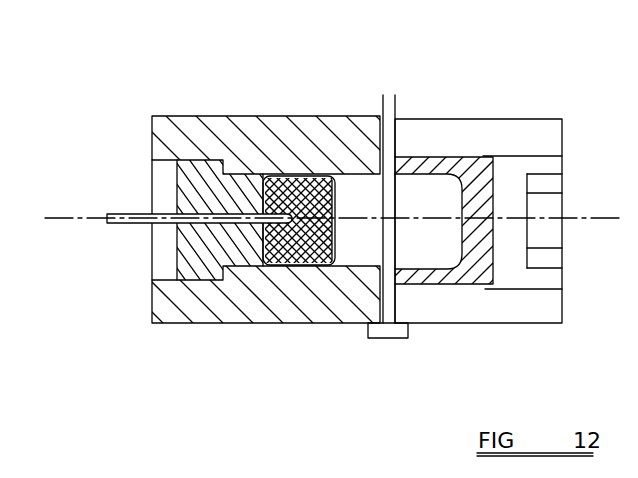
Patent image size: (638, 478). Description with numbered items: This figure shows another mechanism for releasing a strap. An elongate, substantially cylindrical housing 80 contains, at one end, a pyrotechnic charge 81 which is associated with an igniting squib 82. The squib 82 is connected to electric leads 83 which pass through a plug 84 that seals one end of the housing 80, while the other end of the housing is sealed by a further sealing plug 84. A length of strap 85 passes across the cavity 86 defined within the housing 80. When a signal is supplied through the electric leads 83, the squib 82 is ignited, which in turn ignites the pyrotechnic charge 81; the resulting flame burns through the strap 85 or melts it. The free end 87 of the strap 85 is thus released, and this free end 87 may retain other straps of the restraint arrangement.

The housing 80 is at (260, 124).
The pyrotechnic charge 81 is at (305, 265).
The igniting squib 82 is at (319, 175).
The electric leads 83 is at (115, 224).
The sealing plug 84 is at (490, 187).
The strap 85 is at (392, 200).
The cavity 86 is at (352, 240).
The free end of the strap 87 is at (387, 100).